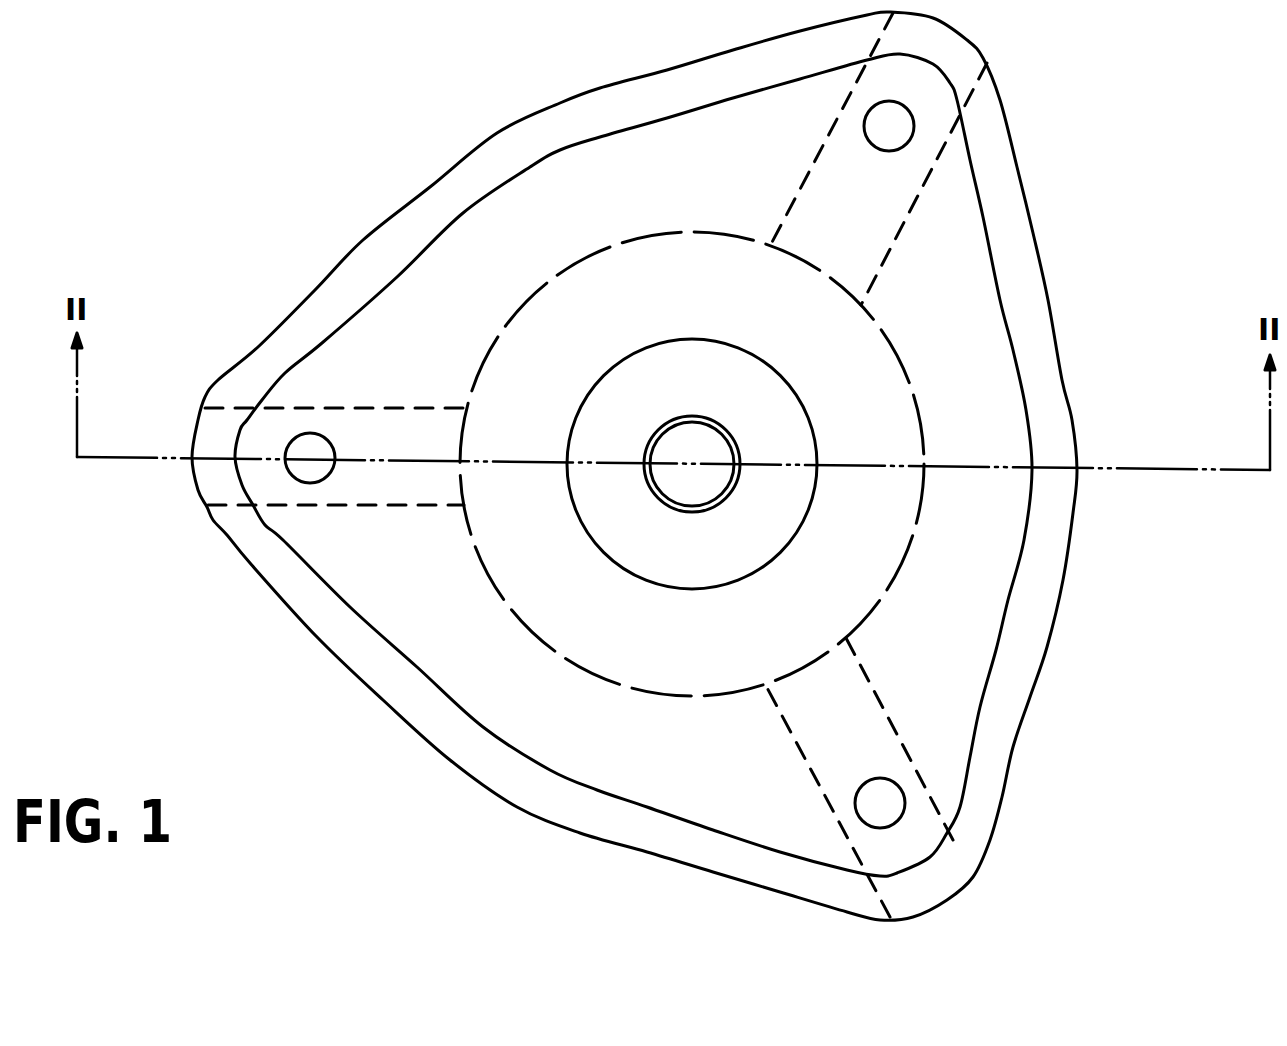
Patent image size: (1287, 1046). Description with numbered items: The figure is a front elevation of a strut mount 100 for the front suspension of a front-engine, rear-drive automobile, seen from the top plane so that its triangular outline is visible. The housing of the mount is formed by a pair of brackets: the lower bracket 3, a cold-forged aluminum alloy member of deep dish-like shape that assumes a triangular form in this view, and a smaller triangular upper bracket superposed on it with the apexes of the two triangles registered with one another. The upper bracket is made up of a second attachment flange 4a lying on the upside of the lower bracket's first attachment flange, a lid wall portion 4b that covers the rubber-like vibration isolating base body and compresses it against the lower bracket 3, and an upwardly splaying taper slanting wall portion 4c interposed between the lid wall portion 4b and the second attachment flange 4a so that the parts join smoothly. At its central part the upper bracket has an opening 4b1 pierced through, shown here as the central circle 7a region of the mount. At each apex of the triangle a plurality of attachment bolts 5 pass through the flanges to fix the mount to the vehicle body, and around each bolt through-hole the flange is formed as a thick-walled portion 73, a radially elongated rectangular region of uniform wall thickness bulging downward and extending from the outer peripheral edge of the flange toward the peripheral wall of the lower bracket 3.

The strut mount 100 is at (1121, 100).
The lower bracket 3 is at (1023, 702).
The second attachment flange 4a is at (920, 188).
The lid wall portion 4b is at (853, 393).
The taper slanting wall portion 4c is at (861, 320).
The opening 4b1 is at (616, 367).
The attachment bolts 5 is at (864, 123).
The flange of inner member 7a is at (738, 572).
The thick-walled portion 73 is at (232, 505).